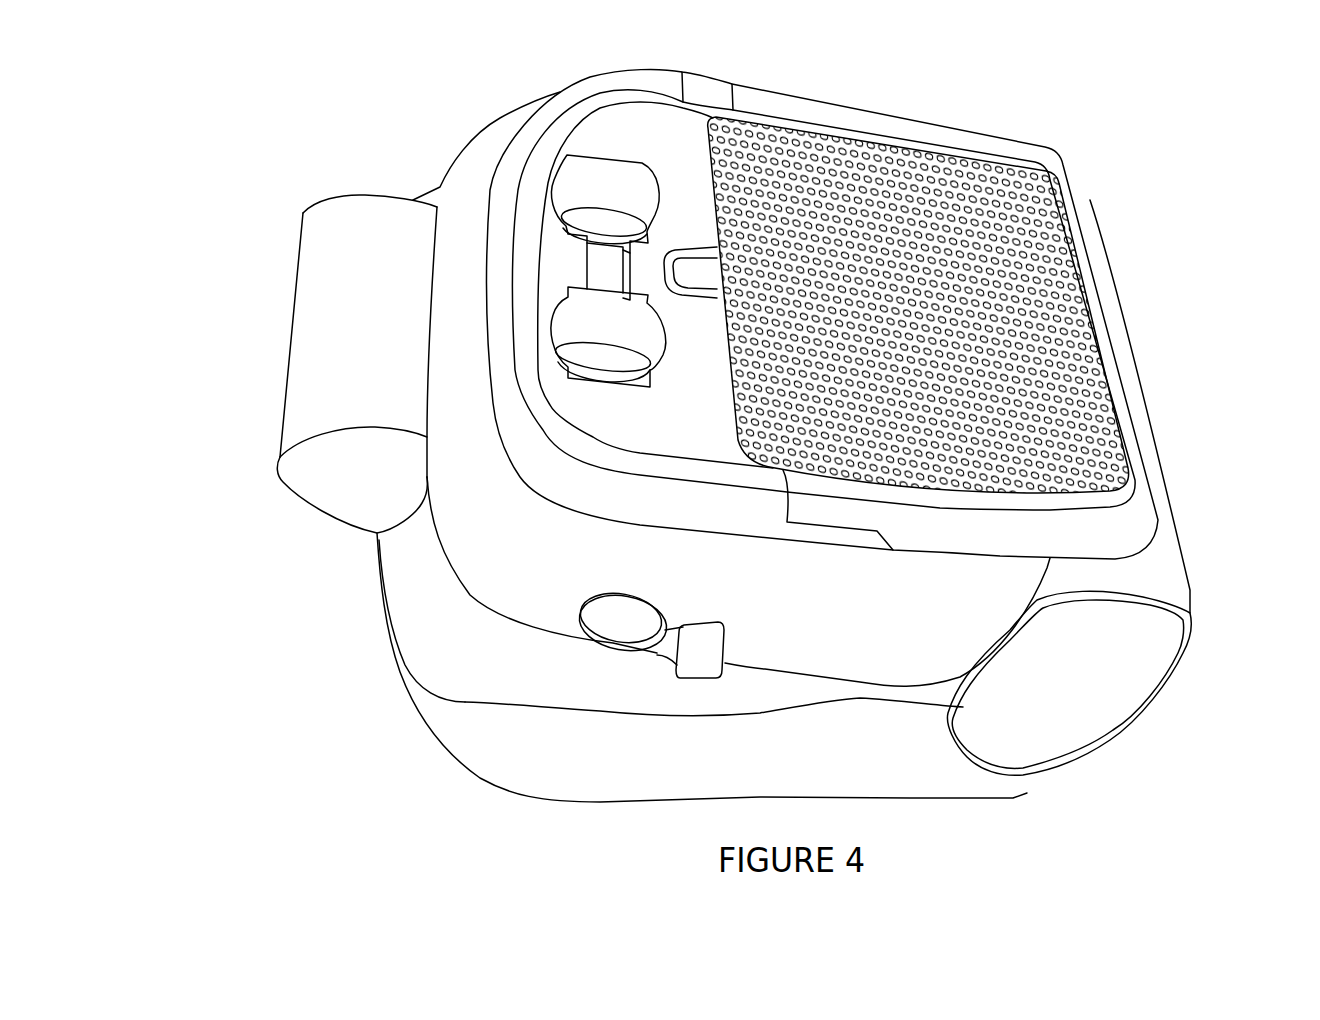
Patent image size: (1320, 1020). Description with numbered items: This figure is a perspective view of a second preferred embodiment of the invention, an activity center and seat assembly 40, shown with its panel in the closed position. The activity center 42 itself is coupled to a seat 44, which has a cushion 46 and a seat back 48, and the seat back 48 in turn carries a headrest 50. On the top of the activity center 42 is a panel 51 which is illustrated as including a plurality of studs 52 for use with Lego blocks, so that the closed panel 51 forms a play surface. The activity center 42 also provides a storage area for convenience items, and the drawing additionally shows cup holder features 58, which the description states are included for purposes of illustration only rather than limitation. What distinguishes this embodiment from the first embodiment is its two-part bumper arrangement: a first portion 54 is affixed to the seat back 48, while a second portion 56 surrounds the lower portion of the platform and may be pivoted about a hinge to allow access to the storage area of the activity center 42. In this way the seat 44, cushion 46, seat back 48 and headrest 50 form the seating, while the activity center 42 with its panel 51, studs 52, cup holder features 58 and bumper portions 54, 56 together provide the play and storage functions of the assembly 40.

The activity center and seat assembly 40 is at (1068, 142).
The activity center 42 is at (641, 146).
The seat 44 is at (600, 803).
The cushion 46 is at (467, 692).
The seat back 48 is at (373, 570).
The headrest 50 is at (312, 328).
The panel 51 is at (1043, 240).
The studs 52 is at (1067, 313).
The first portion 54 is at (533, 103).
The second portion 56 is at (1163, 495).
The socket 58 is at (599, 222).